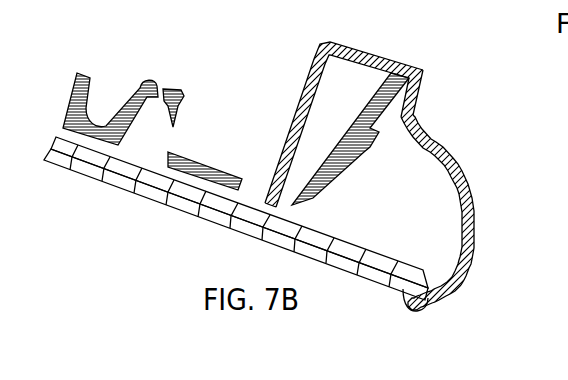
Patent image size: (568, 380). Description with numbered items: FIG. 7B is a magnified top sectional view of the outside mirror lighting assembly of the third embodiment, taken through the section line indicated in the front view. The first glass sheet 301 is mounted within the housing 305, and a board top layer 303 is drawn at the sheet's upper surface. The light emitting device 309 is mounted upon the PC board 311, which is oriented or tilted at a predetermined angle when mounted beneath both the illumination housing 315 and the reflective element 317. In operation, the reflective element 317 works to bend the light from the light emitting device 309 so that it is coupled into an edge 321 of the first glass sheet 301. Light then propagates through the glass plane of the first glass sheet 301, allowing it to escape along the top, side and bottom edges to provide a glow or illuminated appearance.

The first glass sheet 301 is at (120, 190).
The board top layer 303 is at (252, 204).
The housing 305 is at (209, 160).
The light emitting device 309 is at (366, 155).
The PC board 311 is at (412, 110).
The illumination housing 315 is at (365, 50).
The reflective element 317 is at (477, 192).
The edge of the first glass sheet 321 is at (441, 300).